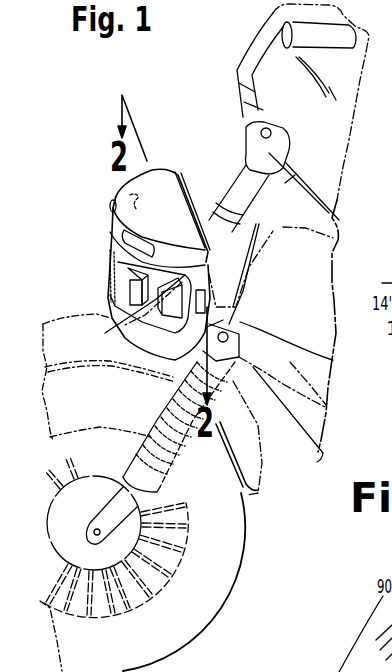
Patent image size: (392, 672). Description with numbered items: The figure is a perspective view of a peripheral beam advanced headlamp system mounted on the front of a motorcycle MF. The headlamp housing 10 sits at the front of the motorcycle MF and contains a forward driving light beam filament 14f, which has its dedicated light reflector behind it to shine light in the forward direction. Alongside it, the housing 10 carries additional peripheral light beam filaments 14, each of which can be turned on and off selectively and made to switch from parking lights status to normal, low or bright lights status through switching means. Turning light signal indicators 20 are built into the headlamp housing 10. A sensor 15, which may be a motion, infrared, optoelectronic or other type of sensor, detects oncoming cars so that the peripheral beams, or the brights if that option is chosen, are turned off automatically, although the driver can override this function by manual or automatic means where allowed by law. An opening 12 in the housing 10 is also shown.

The headlamp housing 10 is at (161, 249).
The opening 12 is at (117, 254).
The peripheral light beam filaments 14 is at (128, 303).
The forward driving light beam filament 14f is at (125, 290).
The sensor 15 is at (138, 200).
The turning light signal indicators 20 is at (112, 203).
The front of a motorcycle MF is at (215, 104).